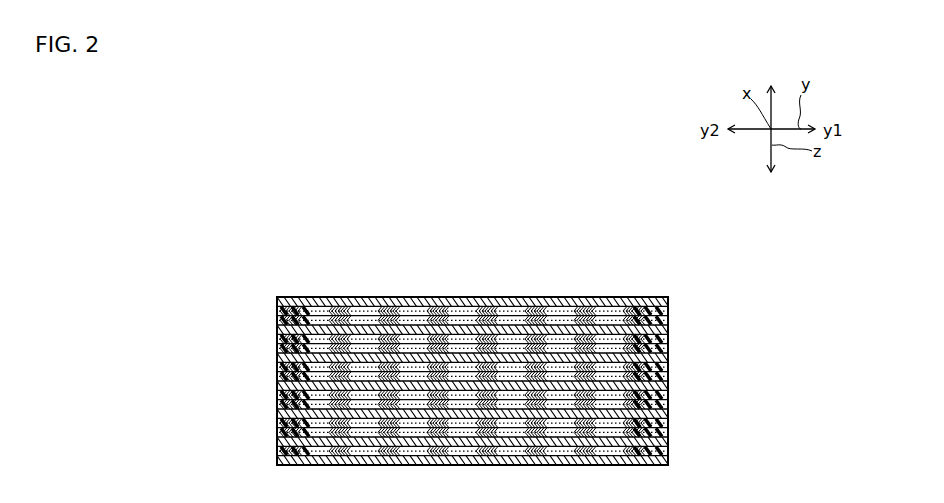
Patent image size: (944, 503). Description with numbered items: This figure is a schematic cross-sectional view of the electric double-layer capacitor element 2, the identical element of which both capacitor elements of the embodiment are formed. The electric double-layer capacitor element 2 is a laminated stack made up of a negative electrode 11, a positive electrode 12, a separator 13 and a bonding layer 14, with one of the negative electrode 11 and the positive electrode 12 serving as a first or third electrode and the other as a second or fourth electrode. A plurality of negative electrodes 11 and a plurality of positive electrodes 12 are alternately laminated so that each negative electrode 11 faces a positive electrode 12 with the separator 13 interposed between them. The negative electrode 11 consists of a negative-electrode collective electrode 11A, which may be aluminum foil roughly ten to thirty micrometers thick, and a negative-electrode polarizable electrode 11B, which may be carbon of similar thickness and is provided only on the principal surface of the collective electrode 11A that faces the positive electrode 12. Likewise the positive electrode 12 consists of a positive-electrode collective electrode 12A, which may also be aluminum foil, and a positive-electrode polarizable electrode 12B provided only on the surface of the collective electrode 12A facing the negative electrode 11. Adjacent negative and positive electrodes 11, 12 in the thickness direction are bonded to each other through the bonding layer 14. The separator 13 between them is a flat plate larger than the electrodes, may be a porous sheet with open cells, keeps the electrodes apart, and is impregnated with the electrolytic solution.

The electric double-layer capacitor element 2 is at (608, 232).
The negative electrode 11 is at (163, 280).
The negative-electrode collective electrode 11A is at (277, 303).
The negative-electrode polarizable electrode 11B is at (277, 313).
The positive electrode 12 is at (163, 340).
The positive-electrode collective electrode 12A is at (277, 367).
The positive-electrode polarizable electrode 12B is at (277, 376).
The separator 13 is at (277, 444).
The bonding layer 14 is at (277, 405).